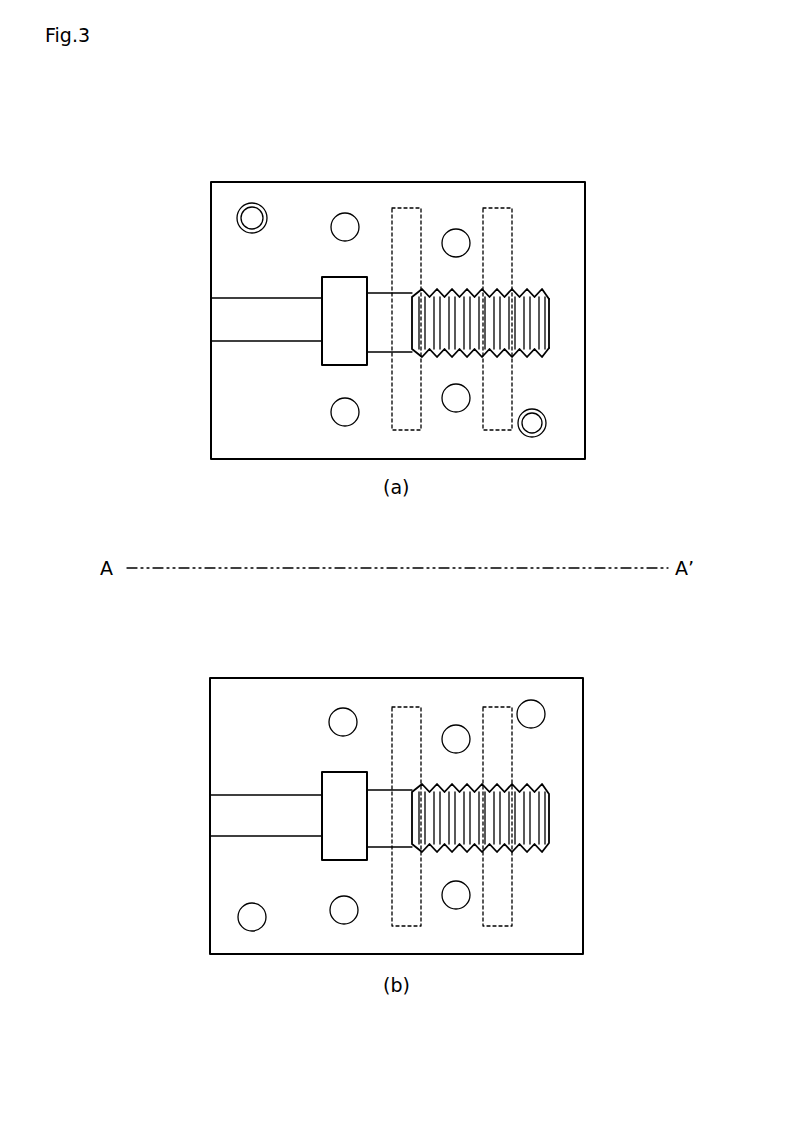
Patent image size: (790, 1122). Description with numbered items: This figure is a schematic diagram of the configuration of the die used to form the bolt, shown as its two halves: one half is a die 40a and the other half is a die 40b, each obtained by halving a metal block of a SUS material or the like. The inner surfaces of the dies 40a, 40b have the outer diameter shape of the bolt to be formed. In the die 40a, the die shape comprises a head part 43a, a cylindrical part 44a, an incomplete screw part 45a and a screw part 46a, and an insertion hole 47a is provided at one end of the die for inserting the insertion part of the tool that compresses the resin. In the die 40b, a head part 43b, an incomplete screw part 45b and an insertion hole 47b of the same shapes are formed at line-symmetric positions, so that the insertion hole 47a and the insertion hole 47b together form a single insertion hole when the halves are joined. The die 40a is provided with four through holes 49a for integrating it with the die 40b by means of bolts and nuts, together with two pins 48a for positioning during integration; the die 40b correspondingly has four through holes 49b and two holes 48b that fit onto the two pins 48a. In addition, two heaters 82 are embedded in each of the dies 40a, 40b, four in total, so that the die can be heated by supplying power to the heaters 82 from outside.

The die 40a is at (585, 320).
The die 40b is at (583, 880).
The head part 43a is at (332, 277).
The head part 43b is at (330, 860).
The cylindrical part 44a is at (383, 292).
The incomplete screw part 45a is at (410, 292).
The incomplete screw part 45b is at (410, 848).
The screw part 46a is at (513, 290).
The insertion hole 47a is at (226, 304).
The insertion hole 47b is at (222, 815).
The pin 48a is at (251, 203).
The hole 48b is at (545, 714).
The through hole 49a is at (345, 213).
The through hole 49b is at (336, 710).
The heater 82 is at (512, 240).